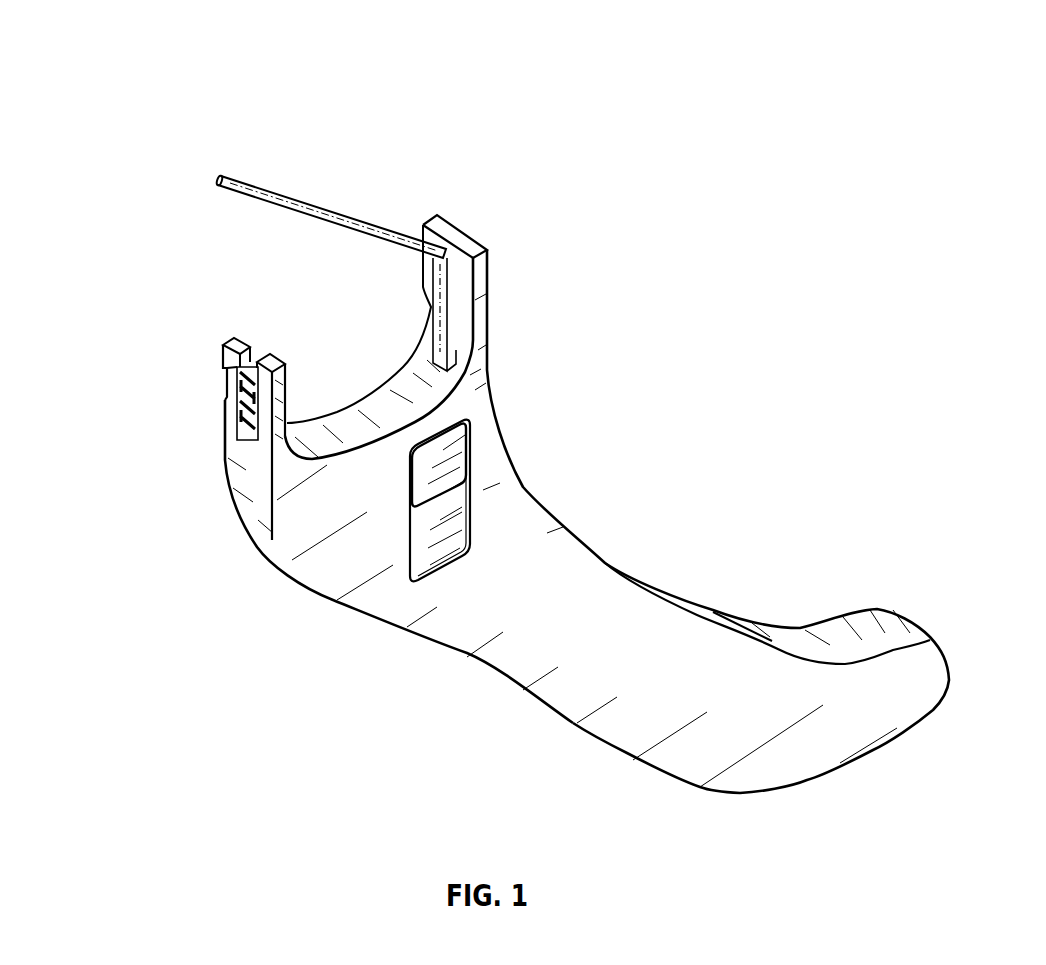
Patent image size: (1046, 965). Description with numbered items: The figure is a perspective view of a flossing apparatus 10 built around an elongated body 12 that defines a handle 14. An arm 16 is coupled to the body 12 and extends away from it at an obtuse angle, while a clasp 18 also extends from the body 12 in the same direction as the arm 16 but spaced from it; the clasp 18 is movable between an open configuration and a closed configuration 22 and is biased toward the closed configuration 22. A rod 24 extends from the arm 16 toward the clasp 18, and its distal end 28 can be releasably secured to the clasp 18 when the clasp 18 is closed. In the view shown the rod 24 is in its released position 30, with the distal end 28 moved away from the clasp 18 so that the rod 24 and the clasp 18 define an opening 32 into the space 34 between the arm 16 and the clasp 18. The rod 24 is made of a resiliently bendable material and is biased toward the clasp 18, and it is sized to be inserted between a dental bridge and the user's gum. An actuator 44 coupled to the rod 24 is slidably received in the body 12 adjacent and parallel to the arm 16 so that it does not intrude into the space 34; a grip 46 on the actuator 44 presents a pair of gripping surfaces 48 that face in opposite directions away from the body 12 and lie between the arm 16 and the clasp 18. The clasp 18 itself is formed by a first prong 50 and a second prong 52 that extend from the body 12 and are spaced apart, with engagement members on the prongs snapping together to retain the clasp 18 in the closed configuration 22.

The flossing apparatus 10 is at (125, 53).
The body 12 is at (642, 537).
The handle 14 is at (500, 660).
The arm 16 is at (487, 294).
The clasp 18 is at (203, 335).
The closed configuration 22 is at (198, 455).
The rod 24 is at (330, 215).
The distal end 28 is at (218, 180).
The released position 30 is at (265, 135).
The opening 32 is at (220, 275).
The space 34 is at (343, 315).
The actuator 44 is at (440, 337).
The grip 46 is at (478, 507).
The gripping surfaces 48 is at (457, 457).
The first prong 50 is at (238, 350).
The second prong 52 is at (273, 366).